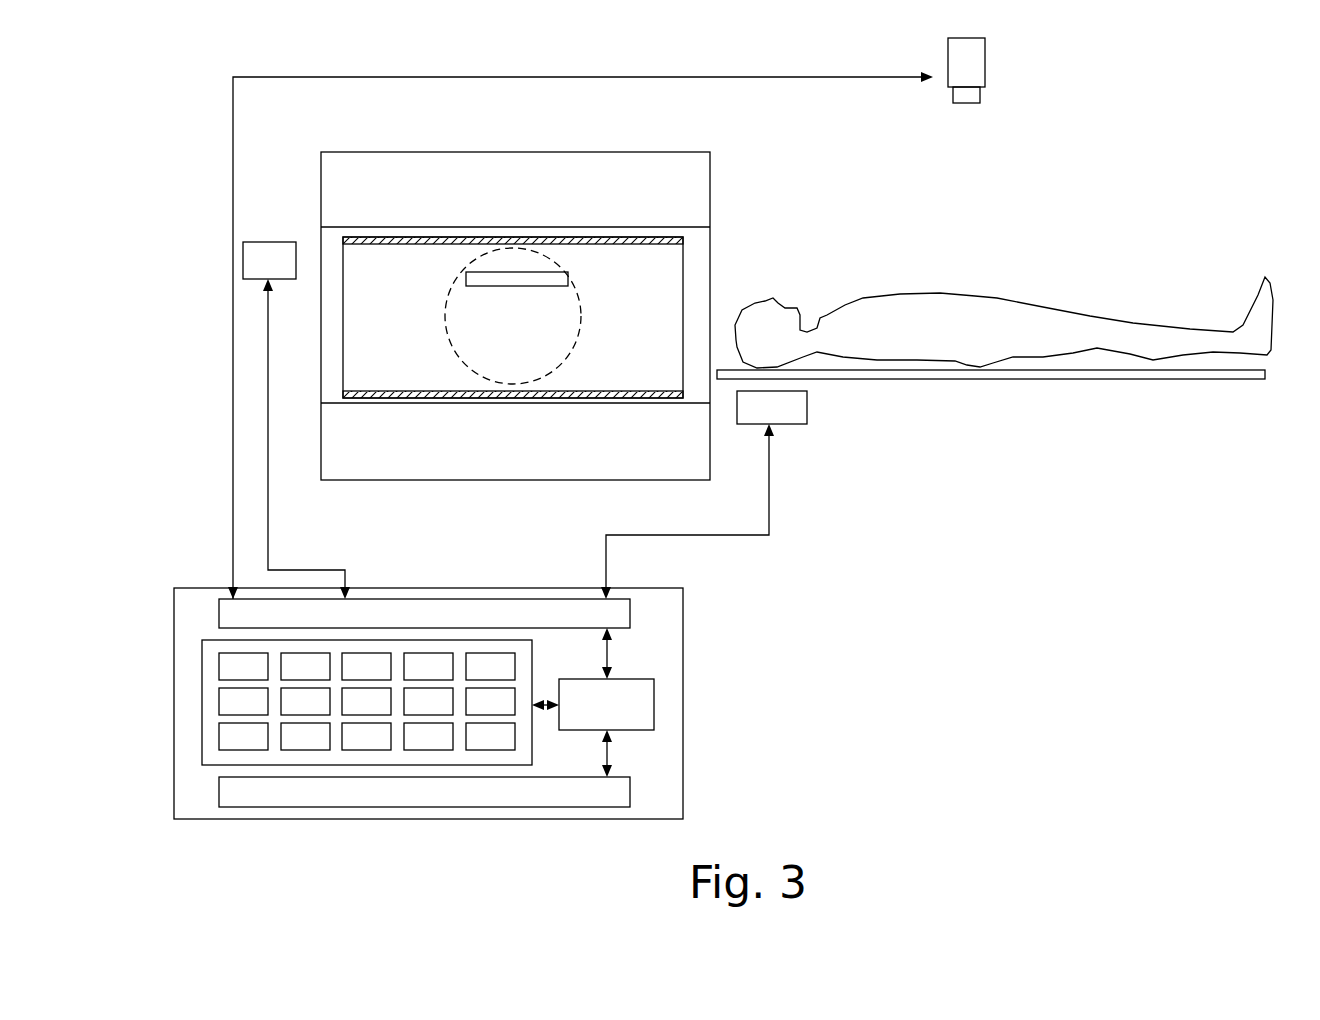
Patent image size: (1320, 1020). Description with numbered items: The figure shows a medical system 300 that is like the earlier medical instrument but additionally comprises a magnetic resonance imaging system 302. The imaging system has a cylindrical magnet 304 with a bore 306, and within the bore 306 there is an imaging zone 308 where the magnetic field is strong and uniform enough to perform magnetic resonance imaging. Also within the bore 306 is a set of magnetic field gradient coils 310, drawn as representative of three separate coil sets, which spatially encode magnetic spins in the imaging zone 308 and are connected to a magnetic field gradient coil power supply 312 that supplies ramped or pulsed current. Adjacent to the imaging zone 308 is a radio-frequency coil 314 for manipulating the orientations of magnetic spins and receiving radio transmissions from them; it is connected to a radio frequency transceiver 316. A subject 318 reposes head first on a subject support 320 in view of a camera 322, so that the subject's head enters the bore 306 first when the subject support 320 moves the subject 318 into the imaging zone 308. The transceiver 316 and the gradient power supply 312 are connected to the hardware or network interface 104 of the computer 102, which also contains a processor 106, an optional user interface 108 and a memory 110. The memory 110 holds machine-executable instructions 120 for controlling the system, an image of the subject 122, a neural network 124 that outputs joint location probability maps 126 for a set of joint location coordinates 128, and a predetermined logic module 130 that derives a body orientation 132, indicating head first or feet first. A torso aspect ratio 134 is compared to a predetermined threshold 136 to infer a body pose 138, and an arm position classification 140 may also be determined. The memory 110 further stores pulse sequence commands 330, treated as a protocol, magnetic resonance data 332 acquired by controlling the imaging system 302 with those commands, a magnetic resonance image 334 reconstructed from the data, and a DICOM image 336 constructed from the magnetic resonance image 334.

The computer 102 is at (683, 623).
The hardware or network interface 104 is at (424, 613).
The processor 106 is at (593, 702).
The user interface 108 is at (424, 792).
The memory 110 is at (202, 700).
The machine-executable instructions 120 is at (243, 666).
The image of the subject 122 is at (305, 666).
The neural network 124 is at (366, 666).
The joint location probability maps 126 is at (428, 666).
The set of joint location coordinates 128 is at (490, 666).
The predetermined logic module 130 is at (243, 701).
The body orientation 132 is at (305, 701).
The torso aspect ratio 134 is at (366, 701).
The predetermined threshold 136 is at (428, 701).
The body pose 138 is at (490, 701).
The arm position classification 140 is at (243, 736).
The medical system 300 is at (1269, 460).
The magnetic resonance imaging system 302 is at (750, 135).
The cylindrical magnet 304 is at (710, 190).
The bore 306 is at (672, 272).
The imaging zone 308 is at (450, 343).
The magnetic field gradient coils 310 is at (525, 397).
The magnetic field gradient coil power supply 312 is at (704, 495).
The radio-frequency coil 314 is at (530, 272).
The radio frequency transceiver 316 is at (296, 420).
The subject 318 is at (997, 298).
The subject support 320 is at (1118, 379).
The camera 322 is at (985, 63).
The pulse sequence commands 330 is at (305, 736).
The magnetic resonance data 332 is at (366, 736).
The magnetic resonance image 334 is at (428, 736).
The DICOM image 336 is at (490, 736).